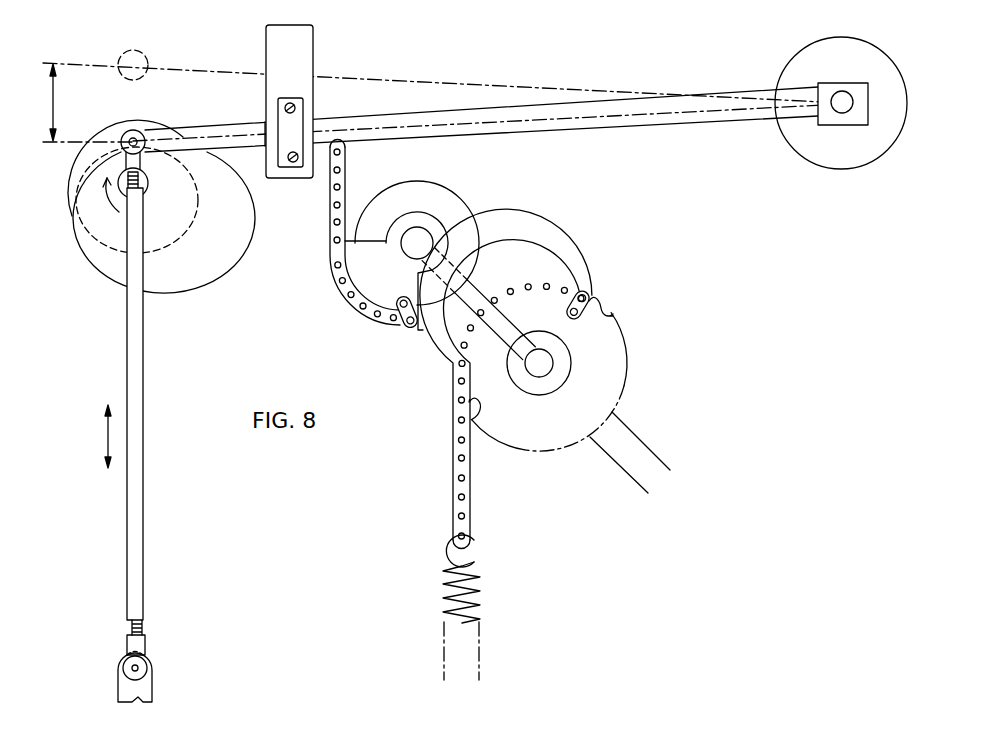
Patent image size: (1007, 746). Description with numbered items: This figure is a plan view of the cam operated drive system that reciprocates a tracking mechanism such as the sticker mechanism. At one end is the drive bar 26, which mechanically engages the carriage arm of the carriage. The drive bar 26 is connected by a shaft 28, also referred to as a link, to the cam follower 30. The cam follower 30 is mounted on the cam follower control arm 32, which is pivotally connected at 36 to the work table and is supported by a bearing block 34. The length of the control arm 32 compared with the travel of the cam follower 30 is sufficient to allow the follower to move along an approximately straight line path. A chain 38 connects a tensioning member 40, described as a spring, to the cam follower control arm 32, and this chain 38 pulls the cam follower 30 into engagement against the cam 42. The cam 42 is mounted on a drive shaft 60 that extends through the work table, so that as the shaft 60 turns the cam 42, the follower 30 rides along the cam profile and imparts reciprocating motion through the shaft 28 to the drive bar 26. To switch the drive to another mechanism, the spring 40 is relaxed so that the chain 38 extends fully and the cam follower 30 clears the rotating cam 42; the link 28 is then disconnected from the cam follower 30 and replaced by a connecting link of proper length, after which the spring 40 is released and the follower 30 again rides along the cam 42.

The drive bar 26 is at (152, 677).
The shaft 28 is at (144, 357).
The cam follower 30 is at (130, 139).
The cam follower control arm 32 is at (642, 127).
The bearing block 34 is at (307, 46).
The pivotal connection 36 is at (842, 112).
The chain 38 is at (330, 220).
The tensioning member 40 is at (637, 326).
The cam 42 is at (202, 272).
The drive shaft 60 is at (149, 183).